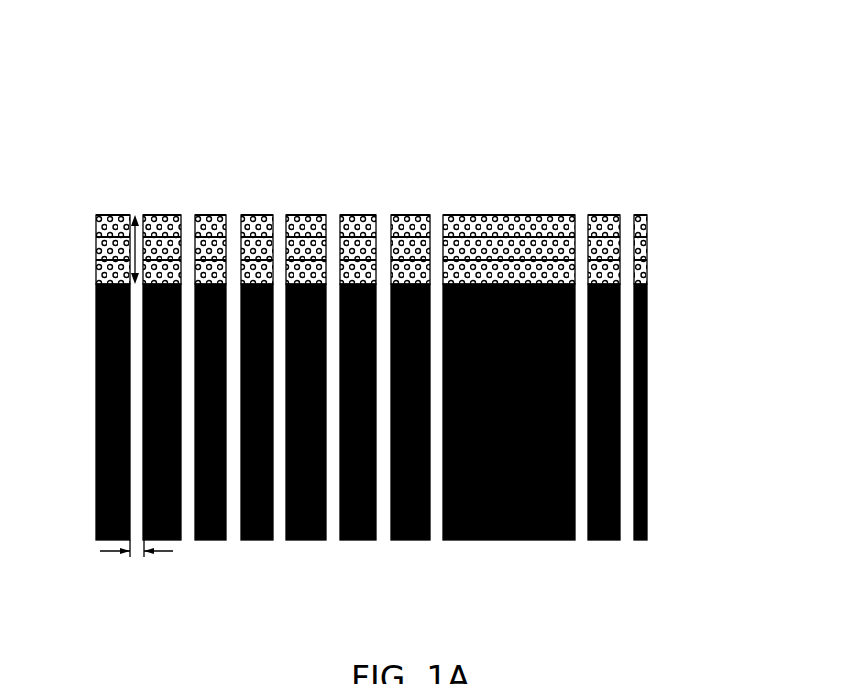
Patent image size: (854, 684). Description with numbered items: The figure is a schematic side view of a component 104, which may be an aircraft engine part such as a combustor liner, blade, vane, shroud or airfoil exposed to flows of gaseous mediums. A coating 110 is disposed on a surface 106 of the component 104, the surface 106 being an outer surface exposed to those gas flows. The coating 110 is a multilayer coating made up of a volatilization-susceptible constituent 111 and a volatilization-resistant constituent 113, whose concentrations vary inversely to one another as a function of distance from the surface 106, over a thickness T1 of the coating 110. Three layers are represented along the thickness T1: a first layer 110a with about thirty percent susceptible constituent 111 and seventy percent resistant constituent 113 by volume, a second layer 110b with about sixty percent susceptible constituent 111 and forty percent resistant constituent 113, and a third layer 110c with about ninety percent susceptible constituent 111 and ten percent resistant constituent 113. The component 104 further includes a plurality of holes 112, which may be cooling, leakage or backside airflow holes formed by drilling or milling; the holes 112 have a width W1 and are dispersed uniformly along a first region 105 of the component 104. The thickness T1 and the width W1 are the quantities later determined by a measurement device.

The component 104 is at (654, 98).
The first region 105 is at (88, 586).
The surface 106 is at (98, 268).
The coating 110 is at (88, 207).
The first layer 110a is at (640, 268).
The second layer 110b is at (640, 238).
The third layer 110c is at (640, 218).
The volatilization-susceptible constituent 111 is at (292, 210).
The volatilization-resistant constituent 113 is at (257, 249).
The plurality of holes 112 is at (572, 525).
The thickness T1 is at (130, 238).
The width W1 is at (105, 543).